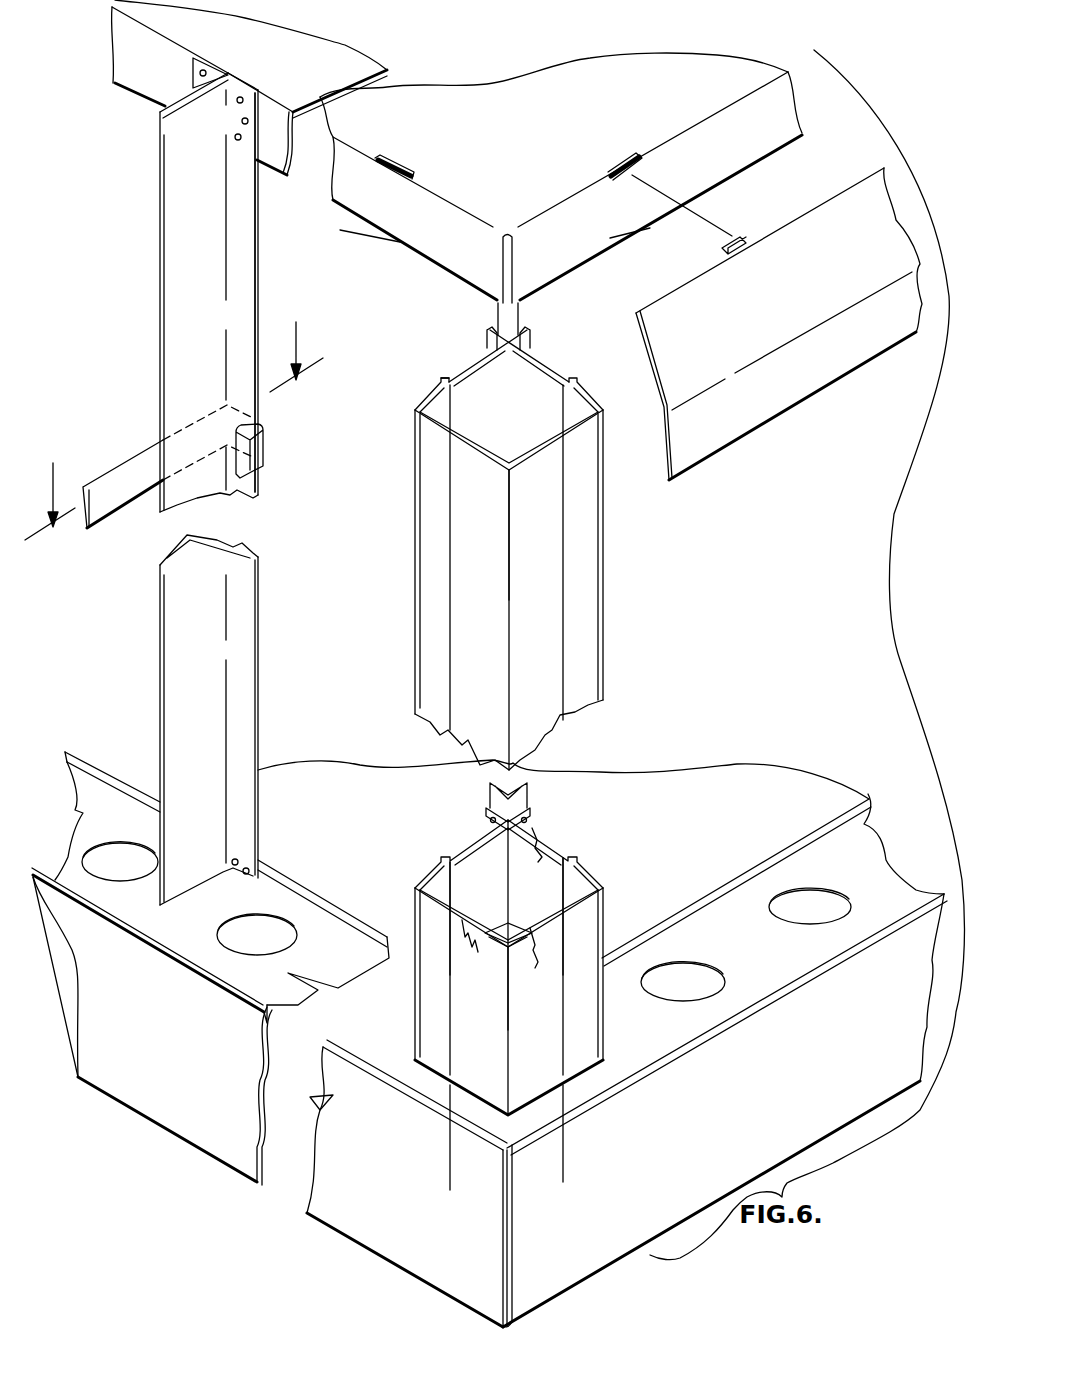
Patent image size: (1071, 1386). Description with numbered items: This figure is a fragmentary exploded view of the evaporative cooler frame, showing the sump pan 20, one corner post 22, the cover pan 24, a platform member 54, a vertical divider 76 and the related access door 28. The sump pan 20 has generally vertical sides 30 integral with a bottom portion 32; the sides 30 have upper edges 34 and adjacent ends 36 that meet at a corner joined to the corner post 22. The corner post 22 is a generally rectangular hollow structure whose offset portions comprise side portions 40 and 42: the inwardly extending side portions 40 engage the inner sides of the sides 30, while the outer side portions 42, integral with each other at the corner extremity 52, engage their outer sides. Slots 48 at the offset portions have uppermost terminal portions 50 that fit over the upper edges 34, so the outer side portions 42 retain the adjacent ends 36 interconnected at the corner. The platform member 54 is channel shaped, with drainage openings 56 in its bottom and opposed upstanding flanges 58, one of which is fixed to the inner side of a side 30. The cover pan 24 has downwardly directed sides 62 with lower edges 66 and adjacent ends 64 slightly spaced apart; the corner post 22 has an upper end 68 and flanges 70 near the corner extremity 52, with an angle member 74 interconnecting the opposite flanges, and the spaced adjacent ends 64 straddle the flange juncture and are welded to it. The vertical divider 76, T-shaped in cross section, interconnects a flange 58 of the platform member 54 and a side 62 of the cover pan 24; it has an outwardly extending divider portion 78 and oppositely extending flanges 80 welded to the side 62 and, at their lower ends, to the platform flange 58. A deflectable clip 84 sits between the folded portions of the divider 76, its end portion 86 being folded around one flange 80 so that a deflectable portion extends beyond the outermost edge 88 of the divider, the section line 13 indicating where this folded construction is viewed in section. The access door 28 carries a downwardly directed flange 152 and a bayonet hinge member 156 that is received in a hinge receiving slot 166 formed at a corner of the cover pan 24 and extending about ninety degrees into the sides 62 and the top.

The section line 13- 13 is at (188, 431).
The sump pan 20 is at (208, 1127).
The corner post 22 is at (550, 613).
The cover pan 24 is at (561, 126).
The access door 28 is at (779, 324).
The side 30 is at (488, 1102).
The bottom portion 32 is at (387, 890).
The upper edge 34 is at (200, 973).
The adjacent end 36 is at (495, 1210).
The side portion 40 is at (508, 730).
The outer side portion 42 is at (501, 792).
The slot 48 is at (448, 1013).
The uppermost terminal portion 50 is at (448, 975).
The corner extremity 52 is at (509, 592).
The platform member 54 is at (83, 813).
The opening 56 is at (217, 933).
The upstanding flange 58 is at (105, 780).
The side 62 is at (143, 60).
The adjacent end 64 is at (503, 270).
The lower edge 66 is at (365, 227).
The upper end 68 is at (465, 449).
The flange 70 is at (487, 337).
The angle member 74 is at (535, 332).
The vertical divider 76 is at (168, 280).
The divider portion 78 is at (160, 590).
The flange 80 is at (238, 310).
The deflectable clip 84 is at (127, 462).
The end portion 86 is at (267, 473).
The outermost edge 88 is at (168, 343).
The downwardly directed flange 152 is at (792, 341).
The bayonet hinge member 156 is at (742, 238).
The hinge receiving slot 166 is at (387, 165).